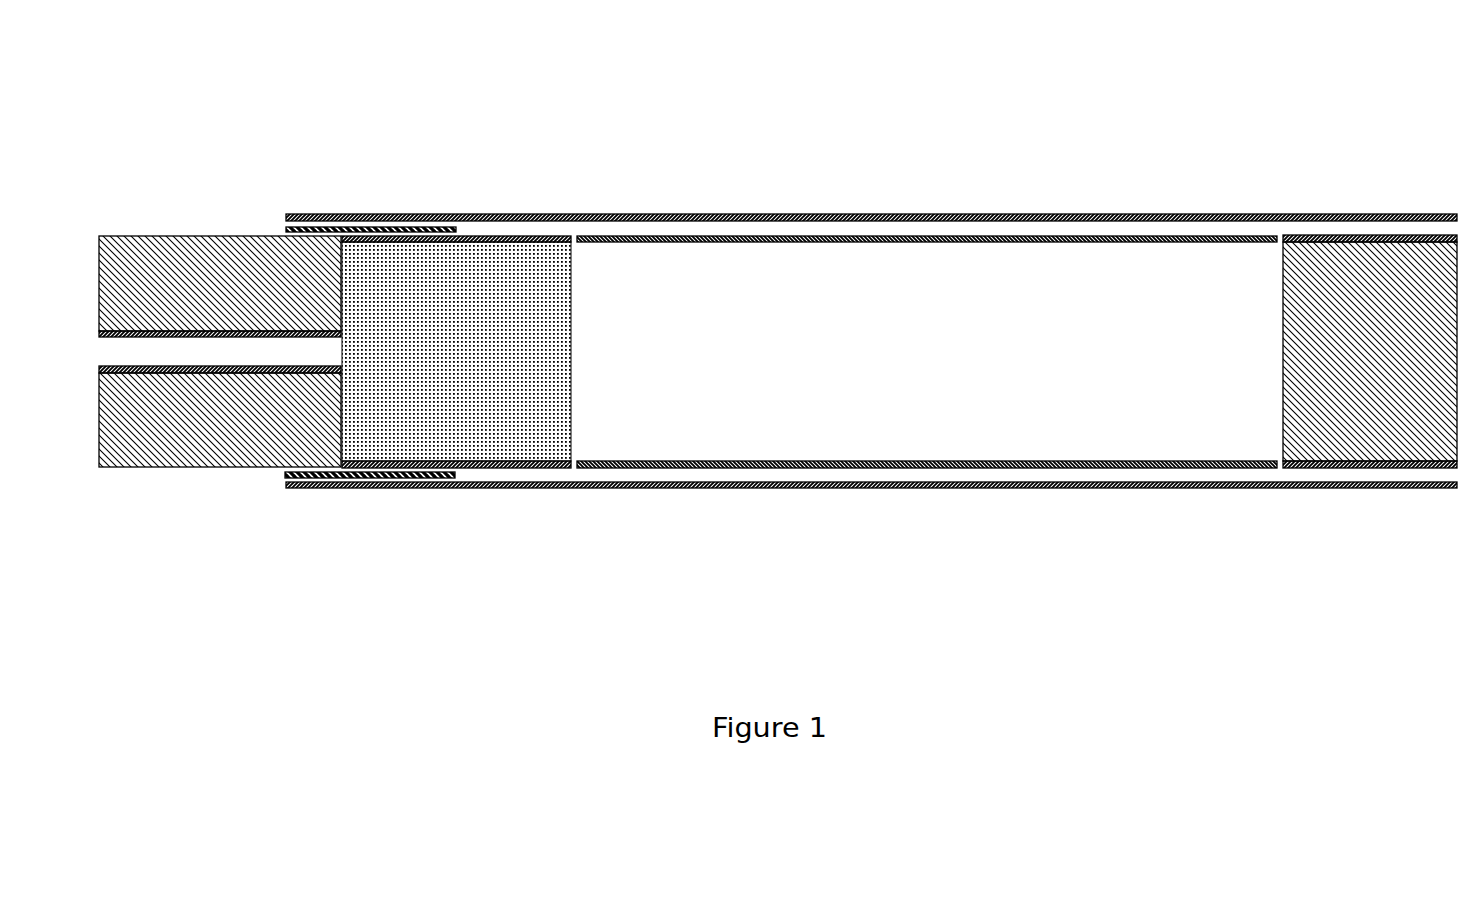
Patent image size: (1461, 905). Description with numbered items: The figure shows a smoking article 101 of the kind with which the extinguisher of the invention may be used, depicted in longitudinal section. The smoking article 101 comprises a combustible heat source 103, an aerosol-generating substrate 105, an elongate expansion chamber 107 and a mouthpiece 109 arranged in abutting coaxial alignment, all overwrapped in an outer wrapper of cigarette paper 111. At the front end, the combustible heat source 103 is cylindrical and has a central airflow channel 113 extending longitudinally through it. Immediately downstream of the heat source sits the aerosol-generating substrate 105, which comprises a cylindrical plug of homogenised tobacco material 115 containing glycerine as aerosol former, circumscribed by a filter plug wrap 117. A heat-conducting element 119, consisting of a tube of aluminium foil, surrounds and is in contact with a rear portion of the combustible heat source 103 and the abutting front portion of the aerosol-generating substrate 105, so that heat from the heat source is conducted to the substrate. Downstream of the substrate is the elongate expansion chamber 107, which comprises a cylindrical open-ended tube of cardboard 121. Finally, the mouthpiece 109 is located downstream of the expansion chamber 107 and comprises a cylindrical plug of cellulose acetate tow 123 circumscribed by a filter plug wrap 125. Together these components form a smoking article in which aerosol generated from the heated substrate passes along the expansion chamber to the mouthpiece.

The smoking article 101 is at (641, 113).
The combustible heat source 103 is at (149, 251).
The aerosol-generating substrate 105 is at (399, 258).
The elongate expansion chamber 107 is at (998, 267).
The mouthpiece 109 is at (1322, 250).
The outer wrapper of cigarette paper 111 is at (1128, 485).
The central airflow channel 113 is at (203, 368).
The plug of homogenised tobacco material 115 is at (522, 430).
The filter plug wrap 117 is at (500, 278).
The heat-conducting element 119 is at (380, 474).
The tube of cardboard 121 is at (862, 463).
The plug of cellulose acetate tow 123 is at (1388, 437).
The filter plug wrap 125 is at (1308, 469).